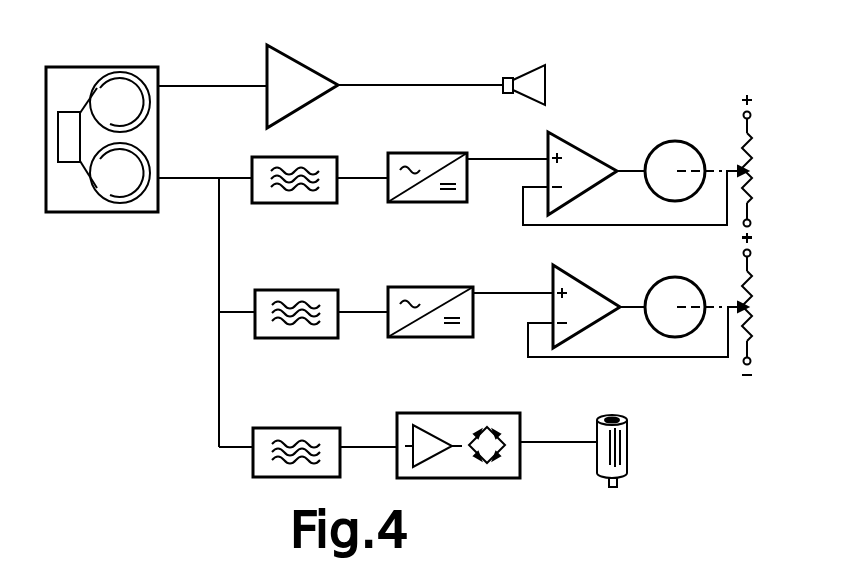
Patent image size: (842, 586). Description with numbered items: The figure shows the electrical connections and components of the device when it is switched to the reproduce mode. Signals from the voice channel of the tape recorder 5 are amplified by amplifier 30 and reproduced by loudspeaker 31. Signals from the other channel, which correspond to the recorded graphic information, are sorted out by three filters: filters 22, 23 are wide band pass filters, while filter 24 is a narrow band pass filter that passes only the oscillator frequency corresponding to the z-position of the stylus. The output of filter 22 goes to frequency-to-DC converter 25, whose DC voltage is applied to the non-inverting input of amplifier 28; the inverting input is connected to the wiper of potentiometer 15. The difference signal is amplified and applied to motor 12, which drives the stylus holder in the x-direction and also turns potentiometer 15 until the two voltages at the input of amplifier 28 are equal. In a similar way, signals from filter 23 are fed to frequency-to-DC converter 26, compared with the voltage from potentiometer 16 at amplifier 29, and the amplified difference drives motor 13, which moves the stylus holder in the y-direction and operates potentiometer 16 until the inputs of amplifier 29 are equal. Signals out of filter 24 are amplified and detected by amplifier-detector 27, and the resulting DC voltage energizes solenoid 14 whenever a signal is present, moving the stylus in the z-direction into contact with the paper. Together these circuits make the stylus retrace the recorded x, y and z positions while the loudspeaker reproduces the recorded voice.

The tape recorder 5 is at (105, 212).
The motor 12 is at (677, 141).
The motor 13 is at (662, 277).
The solenoid 14 is at (628, 437).
The potentiometer 15 is at (753, 168).
The potentiometer 16 is at (753, 300).
The filter 22 is at (293, 157).
The filter 23 is at (290, 290).
The filter 24 is at (292, 428).
The frequency-to-DC converter 25 is at (423, 153).
The frequency-to-DC converter 26 is at (422, 287).
The amplifier-detector 27 is at (442, 413).
The amplifier 28 is at (582, 145).
The amplifier 29 is at (585, 280).
The amplifier 30 is at (295, 57).
The loudspeaker 31 is at (545, 75).